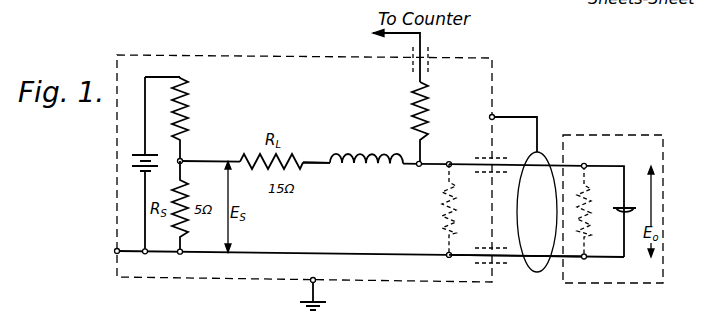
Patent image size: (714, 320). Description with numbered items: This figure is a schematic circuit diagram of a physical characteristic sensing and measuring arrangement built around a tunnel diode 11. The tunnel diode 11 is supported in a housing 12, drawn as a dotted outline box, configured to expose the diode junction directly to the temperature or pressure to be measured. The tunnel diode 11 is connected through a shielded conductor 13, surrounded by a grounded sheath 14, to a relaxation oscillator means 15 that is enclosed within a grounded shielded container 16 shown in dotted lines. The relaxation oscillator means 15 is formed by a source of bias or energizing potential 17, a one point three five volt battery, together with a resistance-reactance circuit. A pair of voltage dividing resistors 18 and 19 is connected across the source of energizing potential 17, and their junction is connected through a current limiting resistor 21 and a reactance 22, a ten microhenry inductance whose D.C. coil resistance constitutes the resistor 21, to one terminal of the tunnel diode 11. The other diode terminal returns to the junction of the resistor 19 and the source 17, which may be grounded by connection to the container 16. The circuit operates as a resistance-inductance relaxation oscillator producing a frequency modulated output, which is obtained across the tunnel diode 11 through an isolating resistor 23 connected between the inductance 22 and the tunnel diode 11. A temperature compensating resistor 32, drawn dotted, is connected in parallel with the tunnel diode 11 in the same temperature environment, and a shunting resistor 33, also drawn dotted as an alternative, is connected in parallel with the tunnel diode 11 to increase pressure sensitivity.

The tunnel diode 11 is at (638, 211).
The housing 12 is at (664, 250).
The shielded conductor 13 is at (557, 165).
The grounded sheath 14 is at (528, 157).
The relaxation oscillator means 15 is at (458, 149).
The shielded container 16 is at (474, 283).
The source of bias or energizing potential 17 is at (137, 172).
The voltage dividing resistor 18 is at (188, 97).
The voltage dividing resistor 19 is at (184, 170).
The current limiting resistor 21 is at (302, 163).
The reactance 22 is at (343, 168).
The isolating resistor 23 is at (428, 94).
The temperature compensating resistor 32 is at (589, 200).
The shunting resistor 33 is at (446, 219).